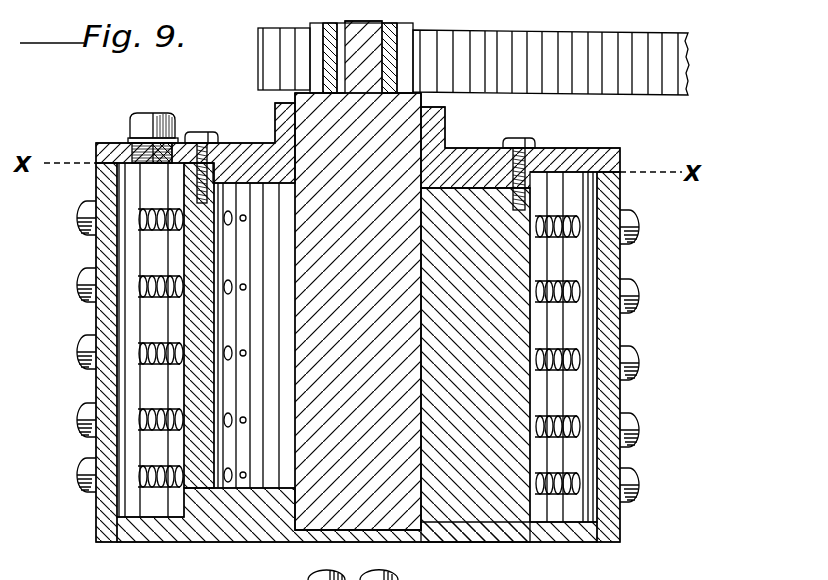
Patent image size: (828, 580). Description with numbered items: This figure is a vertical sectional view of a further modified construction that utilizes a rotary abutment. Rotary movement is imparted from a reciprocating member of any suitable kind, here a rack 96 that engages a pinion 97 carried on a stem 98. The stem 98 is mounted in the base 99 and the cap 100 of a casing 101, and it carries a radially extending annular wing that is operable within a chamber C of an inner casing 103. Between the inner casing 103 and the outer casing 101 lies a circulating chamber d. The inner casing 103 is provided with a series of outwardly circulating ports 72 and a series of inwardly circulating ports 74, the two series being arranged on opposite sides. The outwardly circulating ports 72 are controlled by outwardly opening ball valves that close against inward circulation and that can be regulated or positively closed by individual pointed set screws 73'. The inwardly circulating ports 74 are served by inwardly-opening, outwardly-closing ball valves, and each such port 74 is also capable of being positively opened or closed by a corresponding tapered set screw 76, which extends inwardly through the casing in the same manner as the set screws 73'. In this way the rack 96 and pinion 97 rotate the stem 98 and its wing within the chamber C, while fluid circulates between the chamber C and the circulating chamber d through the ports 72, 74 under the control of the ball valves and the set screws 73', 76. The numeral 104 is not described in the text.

The rack 96 is at (672, 63).
The pinion 97 is at (318, 45).
The stem 98 is at (358, 275).
The base 99 is at (383, 537).
The cap 100 is at (473, 153).
The casing 101 is at (608, 326).
The inner casing 103 is at (206, 246).
The left side wall 104 is at (106, 313).
The outwardly circulating ports 72 is at (244, 290).
The inwardly circulating ports 74 is at (229, 294).
The tapered set screw 76 is at (90, 467).
The pointed set screw 73' is at (668, 356).
The circulating chamber d is at (155, 383).
The chamber C is at (248, 335).